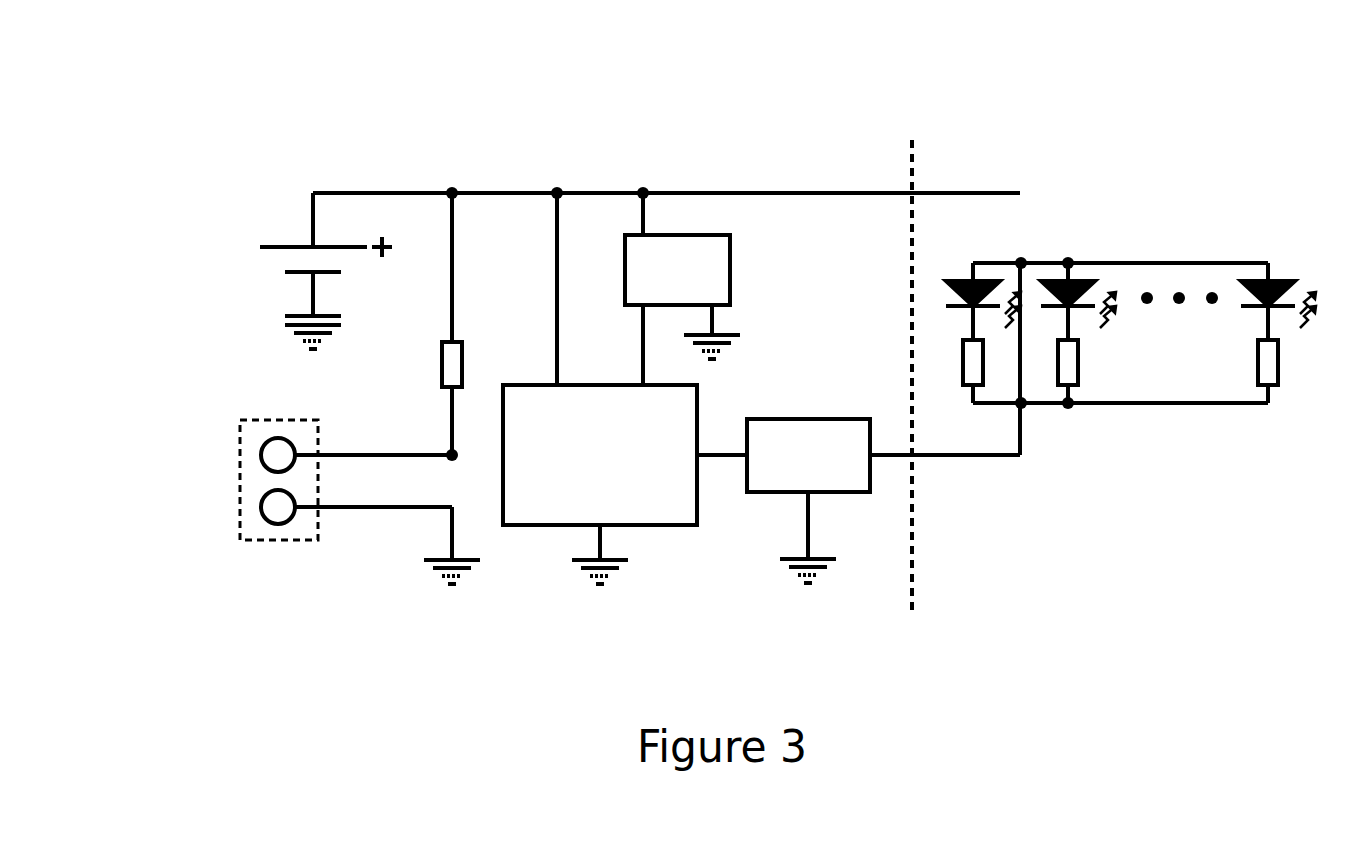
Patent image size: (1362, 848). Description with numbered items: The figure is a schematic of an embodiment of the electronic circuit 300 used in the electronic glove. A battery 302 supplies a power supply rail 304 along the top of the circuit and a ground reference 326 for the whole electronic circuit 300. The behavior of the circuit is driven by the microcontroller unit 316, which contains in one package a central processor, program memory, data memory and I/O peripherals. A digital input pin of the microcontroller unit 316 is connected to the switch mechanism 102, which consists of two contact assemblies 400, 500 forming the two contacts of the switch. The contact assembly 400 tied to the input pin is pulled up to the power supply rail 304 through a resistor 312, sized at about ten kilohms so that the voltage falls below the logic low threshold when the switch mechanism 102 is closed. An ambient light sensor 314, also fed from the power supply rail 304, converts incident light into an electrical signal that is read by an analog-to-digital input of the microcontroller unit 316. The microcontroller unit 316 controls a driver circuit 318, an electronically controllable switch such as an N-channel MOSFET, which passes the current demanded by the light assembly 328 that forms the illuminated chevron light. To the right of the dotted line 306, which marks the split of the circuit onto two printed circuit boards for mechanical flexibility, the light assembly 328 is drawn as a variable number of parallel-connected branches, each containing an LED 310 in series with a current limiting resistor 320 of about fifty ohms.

The electronic circuit 300 is at (604, 117).
The battery 302 is at (272, 246).
The power supply rail 304 is at (510, 192).
The dotted line 306 is at (910, 155).
The light emitting diode 310 is at (1279, 281).
The resistor 312 is at (462, 361).
The ambient light sensor 314 is at (731, 269).
The microcontroller unit 316 is at (698, 402).
The driver circuit 318 is at (810, 419).
The current limiting resistor 320 is at (1278, 375).
The ground reference 326 is at (612, 577).
The light assembly 328 is at (1135, 391).
The switch mechanism 102 is at (315, 472).
The contact assembly 400 is at (261, 455).
The contact assembly 500 is at (261, 507).